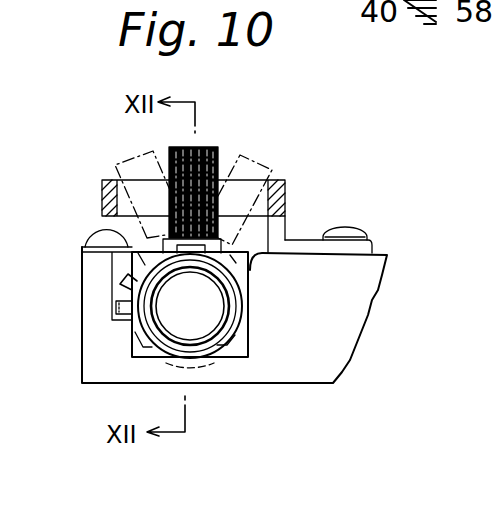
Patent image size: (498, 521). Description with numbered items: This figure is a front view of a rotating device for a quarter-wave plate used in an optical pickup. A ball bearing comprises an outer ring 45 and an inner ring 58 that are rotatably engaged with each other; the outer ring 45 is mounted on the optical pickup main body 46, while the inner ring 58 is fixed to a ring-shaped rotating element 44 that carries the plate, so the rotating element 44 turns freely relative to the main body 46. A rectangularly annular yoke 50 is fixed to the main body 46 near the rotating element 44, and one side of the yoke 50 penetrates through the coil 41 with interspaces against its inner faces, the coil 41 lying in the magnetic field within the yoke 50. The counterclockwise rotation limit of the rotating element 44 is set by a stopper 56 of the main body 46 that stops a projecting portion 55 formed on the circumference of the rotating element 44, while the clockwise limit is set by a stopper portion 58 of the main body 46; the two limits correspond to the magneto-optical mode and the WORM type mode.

The coil 41 is at (217, 146).
The rotating element 44 is at (132, 338).
The outer ring 45 is at (180, 350).
The optical pickup main body 46 is at (363, 297).
The yoke 50 is at (283, 181).
The projecting portion 55 is at (122, 284).
The stopper 56 is at (116, 313).
The inner ring 58 is at (268, 251).